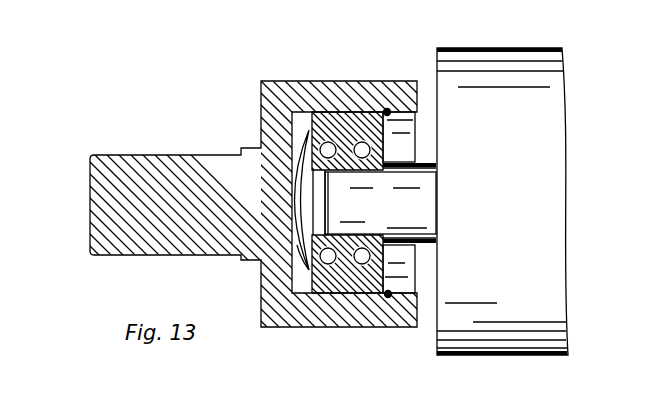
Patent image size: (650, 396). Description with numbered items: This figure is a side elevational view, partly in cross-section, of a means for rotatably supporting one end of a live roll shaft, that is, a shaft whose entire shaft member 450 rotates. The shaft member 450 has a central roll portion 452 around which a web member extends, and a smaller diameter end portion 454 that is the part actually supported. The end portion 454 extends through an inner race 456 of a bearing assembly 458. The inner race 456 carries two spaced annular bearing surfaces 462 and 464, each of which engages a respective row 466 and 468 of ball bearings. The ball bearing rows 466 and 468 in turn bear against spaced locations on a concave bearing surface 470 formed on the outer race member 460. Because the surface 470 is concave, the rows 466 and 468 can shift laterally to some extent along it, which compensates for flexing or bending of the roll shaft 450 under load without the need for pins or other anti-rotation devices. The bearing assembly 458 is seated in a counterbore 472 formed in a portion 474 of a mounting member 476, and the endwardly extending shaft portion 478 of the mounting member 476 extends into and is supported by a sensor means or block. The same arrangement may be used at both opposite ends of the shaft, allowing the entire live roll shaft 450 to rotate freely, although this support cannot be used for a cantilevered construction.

The shaft member 450 is at (485, 49).
The central roll portion 452 is at (537, 75).
The end portion 454 is at (362, 207).
The inner race 456 is at (425, 167).
The bearing assembly 458 is at (337, 115).
The outer race member 460 is at (372, 135).
The annular bearing surface 462 is at (300, 137).
The annular bearing surface 464 is at (390, 147).
The row of ball bearings 466 is at (328, 267).
The row of ball bearings 468 is at (362, 267).
The concave bearing surface 470 is at (332, 140).
The counterbore 472 is at (300, 268).
The portion of mounting member 474 is at (415, 330).
The mounting member 476 is at (260, 104).
The endwardly extending shaft portion 478 is at (142, 208).